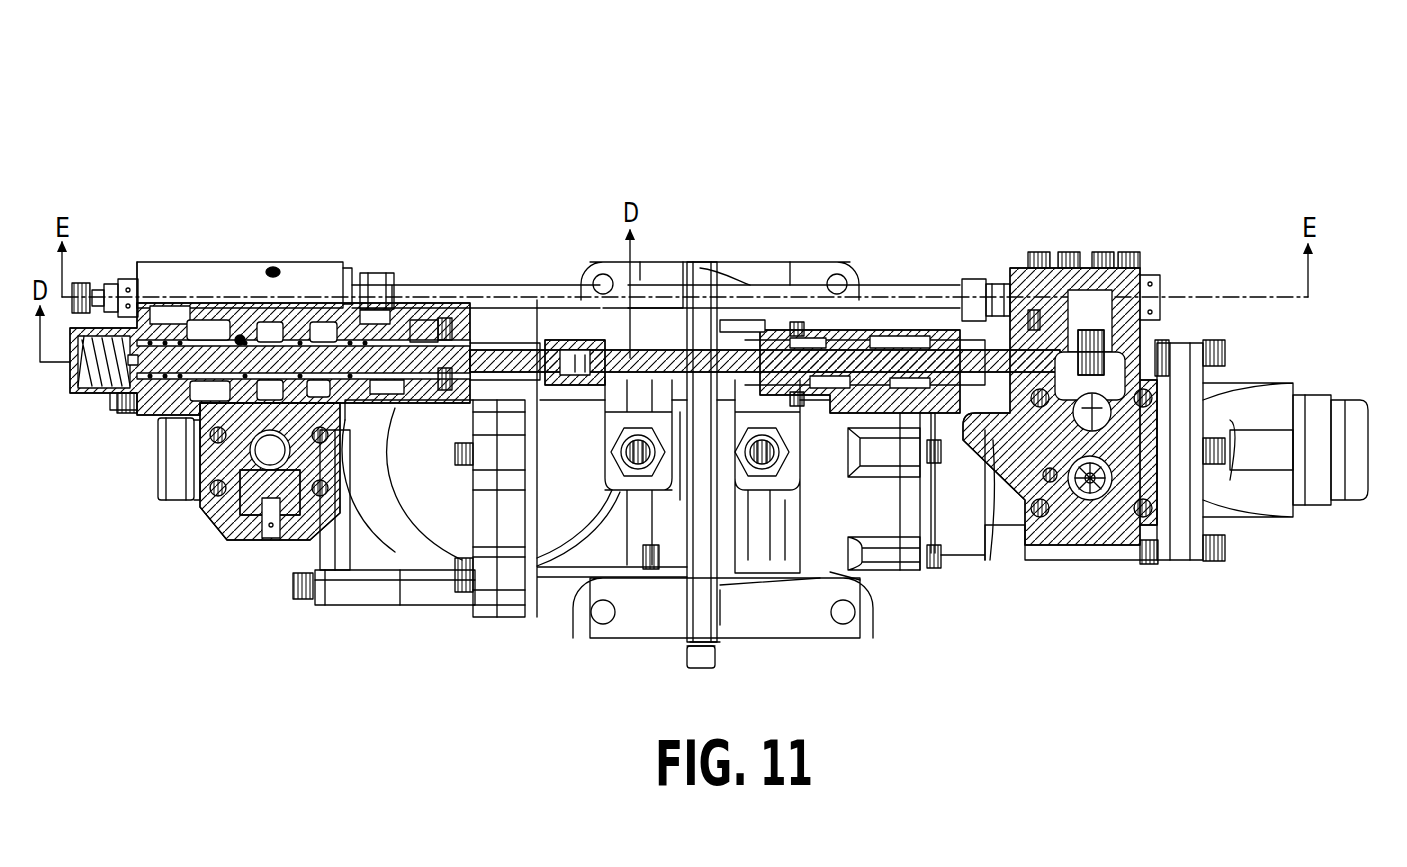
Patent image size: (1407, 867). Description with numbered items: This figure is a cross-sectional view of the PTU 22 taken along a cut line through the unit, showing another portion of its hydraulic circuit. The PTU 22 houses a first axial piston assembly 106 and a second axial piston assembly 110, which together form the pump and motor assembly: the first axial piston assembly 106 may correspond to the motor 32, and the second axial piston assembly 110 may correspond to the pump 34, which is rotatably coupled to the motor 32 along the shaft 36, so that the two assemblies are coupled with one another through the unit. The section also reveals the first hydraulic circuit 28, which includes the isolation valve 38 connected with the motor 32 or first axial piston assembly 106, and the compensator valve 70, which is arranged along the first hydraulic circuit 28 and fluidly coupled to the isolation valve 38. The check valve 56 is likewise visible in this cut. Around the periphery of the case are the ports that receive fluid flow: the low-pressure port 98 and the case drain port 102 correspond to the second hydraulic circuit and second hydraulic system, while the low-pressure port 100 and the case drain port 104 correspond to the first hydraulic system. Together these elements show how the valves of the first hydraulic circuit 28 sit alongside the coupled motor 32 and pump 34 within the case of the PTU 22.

The PTU 22 is at (130, 146).
The first hydraulic circuit 28 is at (430, 322).
The motor 32 is at (546, 348).
The pump 34 is at (832, 335).
The shaft 36 is at (697, 350).
The isolation valve 38 is at (240, 336).
The check valve 56 is at (1090, 345).
The compensator valve 70 is at (308, 268).
The low-pressure port 98 is at (1358, 420).
The low-pressure port 100 is at (168, 466).
The case drain port 102 is at (762, 470).
The case drain port 104 is at (637, 470).
The first axial piston assembly 106 is at (546, 296).
The second axial piston assembly 110 is at (840, 308).